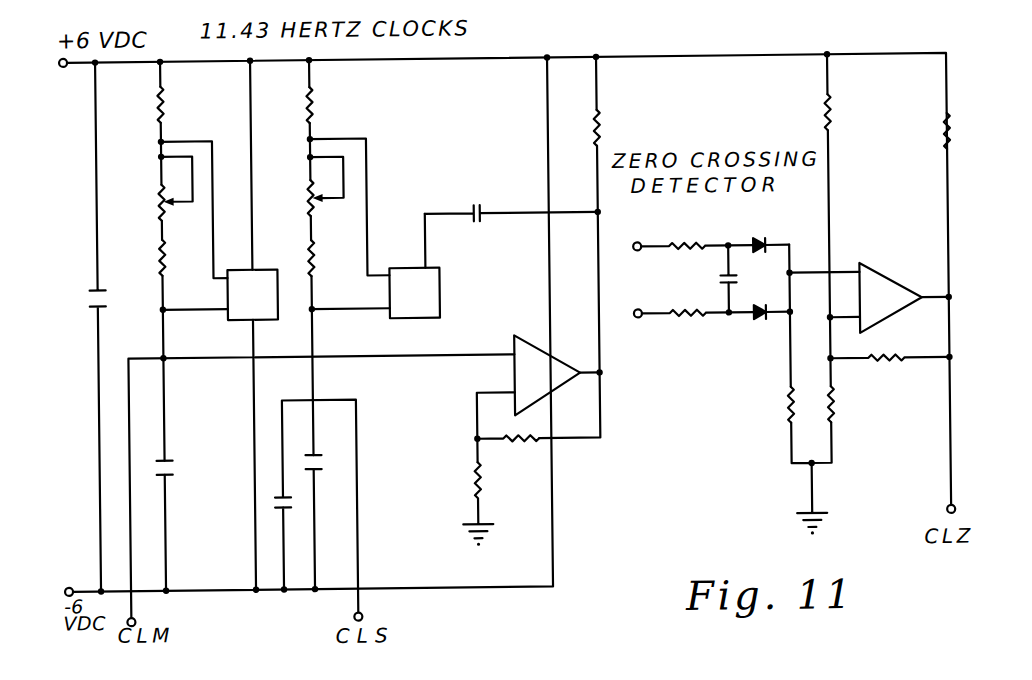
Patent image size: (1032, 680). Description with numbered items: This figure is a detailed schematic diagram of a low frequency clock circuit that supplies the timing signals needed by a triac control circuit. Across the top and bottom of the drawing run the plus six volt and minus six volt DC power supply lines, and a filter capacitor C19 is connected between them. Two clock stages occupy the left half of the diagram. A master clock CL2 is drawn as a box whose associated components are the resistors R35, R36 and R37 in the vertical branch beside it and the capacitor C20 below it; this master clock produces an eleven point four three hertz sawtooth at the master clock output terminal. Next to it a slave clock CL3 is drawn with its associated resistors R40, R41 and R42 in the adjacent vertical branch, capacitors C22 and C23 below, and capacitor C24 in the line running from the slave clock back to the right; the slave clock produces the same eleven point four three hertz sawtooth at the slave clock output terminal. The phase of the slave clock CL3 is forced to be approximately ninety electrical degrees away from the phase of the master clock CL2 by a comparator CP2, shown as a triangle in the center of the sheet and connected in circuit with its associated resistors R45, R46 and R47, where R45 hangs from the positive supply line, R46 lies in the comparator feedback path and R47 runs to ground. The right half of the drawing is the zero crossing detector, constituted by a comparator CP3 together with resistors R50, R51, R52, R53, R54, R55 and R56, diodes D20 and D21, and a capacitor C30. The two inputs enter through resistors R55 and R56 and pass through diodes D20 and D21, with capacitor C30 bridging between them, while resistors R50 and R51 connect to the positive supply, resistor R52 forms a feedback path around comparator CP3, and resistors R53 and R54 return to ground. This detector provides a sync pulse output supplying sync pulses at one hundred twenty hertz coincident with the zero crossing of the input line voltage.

The resistor R35 is at (166, 108).
The resistor R36 is at (160, 206).
The resistor R37 is at (160, 260).
The filter capacitor C19 is at (104, 300).
The capacitor C20 is at (170, 460).
The master clock CL2 is at (220, 326).
The capacitor C22 is at (282, 508).
The resistor R40 is at (318, 112).
The resistor R41 is at (310, 188).
The resistor R42 is at (314, 266).
The capacitor C23 is at (318, 456).
The slave clock CL3 is at (375, 228).
The capacitor C24 is at (478, 210).
The resistor R45 is at (604, 126).
The comparator CP2 is at (538, 398).
The resistor R46 is at (522, 446).
The resistor R47 is at (474, 482).
The resistor R50 is at (832, 110).
The resistor R51 is at (947, 140).
The resistor R55 is at (690, 246).
The diode D20 is at (760, 246).
The capacitor C30 is at (722, 280).
The resistor R56 is at (686, 318).
The diode D21 is at (758, 320).
The comparator CP3 is at (869, 298).
The resistor R52 is at (884, 368).
The resistor R54 is at (786, 420).
The resistor R53 is at (834, 420).